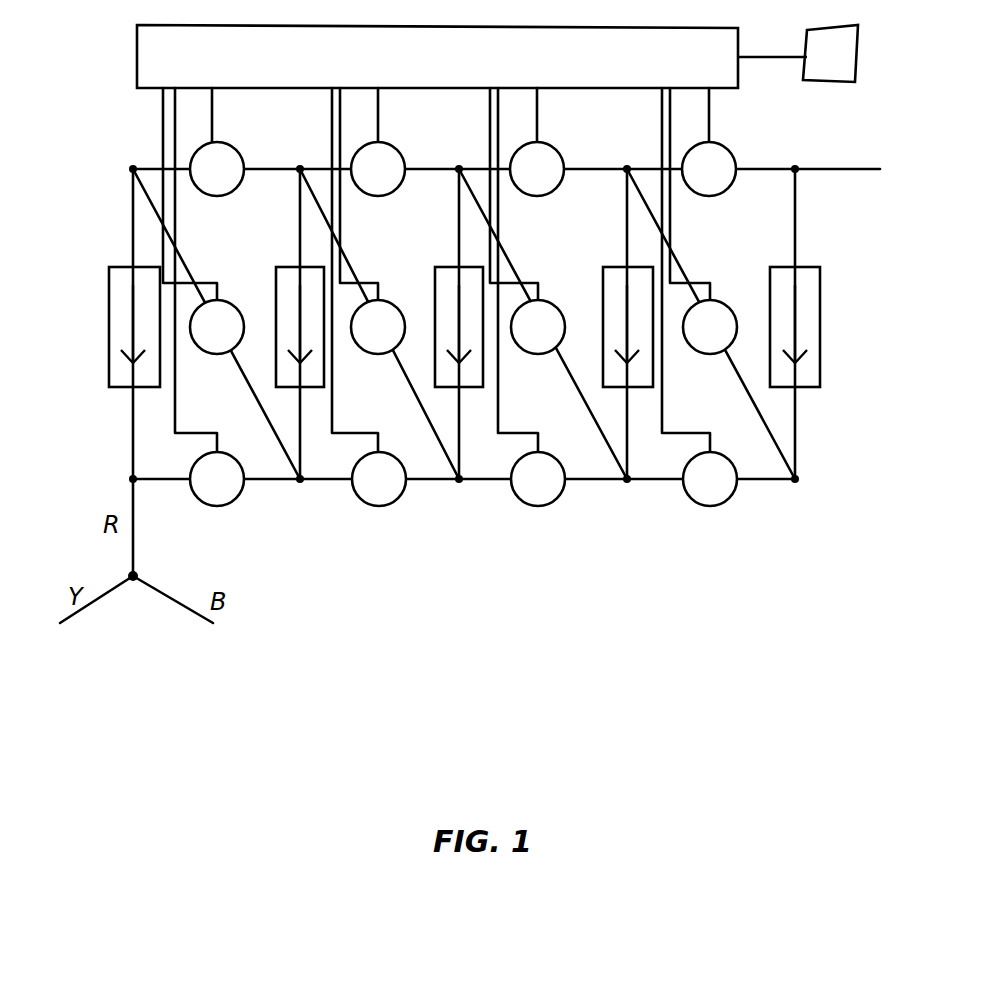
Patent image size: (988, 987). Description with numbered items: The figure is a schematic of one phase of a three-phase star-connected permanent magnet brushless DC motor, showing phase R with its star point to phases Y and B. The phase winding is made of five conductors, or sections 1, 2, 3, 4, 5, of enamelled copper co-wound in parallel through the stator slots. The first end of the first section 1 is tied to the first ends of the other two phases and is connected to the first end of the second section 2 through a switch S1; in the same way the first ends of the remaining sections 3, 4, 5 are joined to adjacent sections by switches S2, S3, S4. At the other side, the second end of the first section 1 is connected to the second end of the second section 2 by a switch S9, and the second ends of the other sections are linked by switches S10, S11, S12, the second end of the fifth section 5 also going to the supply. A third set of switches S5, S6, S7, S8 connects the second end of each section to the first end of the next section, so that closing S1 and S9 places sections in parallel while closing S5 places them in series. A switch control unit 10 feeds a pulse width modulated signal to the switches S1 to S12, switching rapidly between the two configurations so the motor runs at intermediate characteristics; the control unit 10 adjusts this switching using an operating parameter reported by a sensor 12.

The first section 1 is at (117, 293).
The second section 2 is at (285, 293).
The third section 3 is at (445, 293).
The fourth section 4 is at (612, 293).
The fifth section 5 is at (780, 293).
The switch control unit 10 is at (437, 56).
The sensor 12 is at (798, 53).
The switch S1 is at (217, 479).
The switch S2 is at (379, 479).
The switch S3 is at (538, 479).
The switch S4 is at (710, 479).
The switch S5 is at (217, 327).
The switch S6 is at (378, 327).
The switch S7 is at (538, 327).
The switch S8 is at (710, 327).
The switch S9 is at (217, 169).
The switch S10 is at (378, 169).
The switch S11 is at (537, 169).
The switch S12 is at (709, 169).